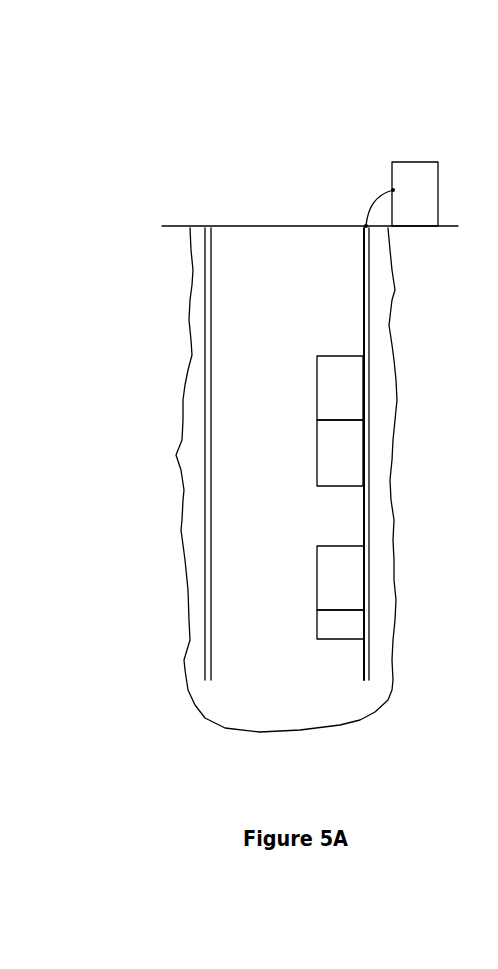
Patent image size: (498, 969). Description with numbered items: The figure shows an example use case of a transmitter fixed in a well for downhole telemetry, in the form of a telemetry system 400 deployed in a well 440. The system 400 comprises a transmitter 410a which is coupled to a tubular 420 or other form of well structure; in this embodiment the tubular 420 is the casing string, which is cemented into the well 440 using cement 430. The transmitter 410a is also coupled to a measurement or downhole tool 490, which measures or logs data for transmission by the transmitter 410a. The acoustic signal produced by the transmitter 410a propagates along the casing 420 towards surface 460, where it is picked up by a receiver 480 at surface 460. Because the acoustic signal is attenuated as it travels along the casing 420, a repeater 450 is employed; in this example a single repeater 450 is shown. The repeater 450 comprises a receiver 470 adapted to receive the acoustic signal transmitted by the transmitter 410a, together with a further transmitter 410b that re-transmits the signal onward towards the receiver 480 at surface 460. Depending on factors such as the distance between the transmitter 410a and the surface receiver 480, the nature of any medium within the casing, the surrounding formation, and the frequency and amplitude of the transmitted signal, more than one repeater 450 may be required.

The telemetry system 400 is at (148, 108).
The transmitter 410a is at (349, 599).
The transmitter 410b is at (316, 393).
The tubular 420 is at (367, 499).
The cement 430 is at (382, 445).
The well 440 is at (397, 408).
The repeater 450 is at (355, 372).
The surface 460 is at (176, 225).
The receiver 470 is at (316, 453).
The receiver 480 is at (406, 161).
The downhole tool 490 is at (340, 624).